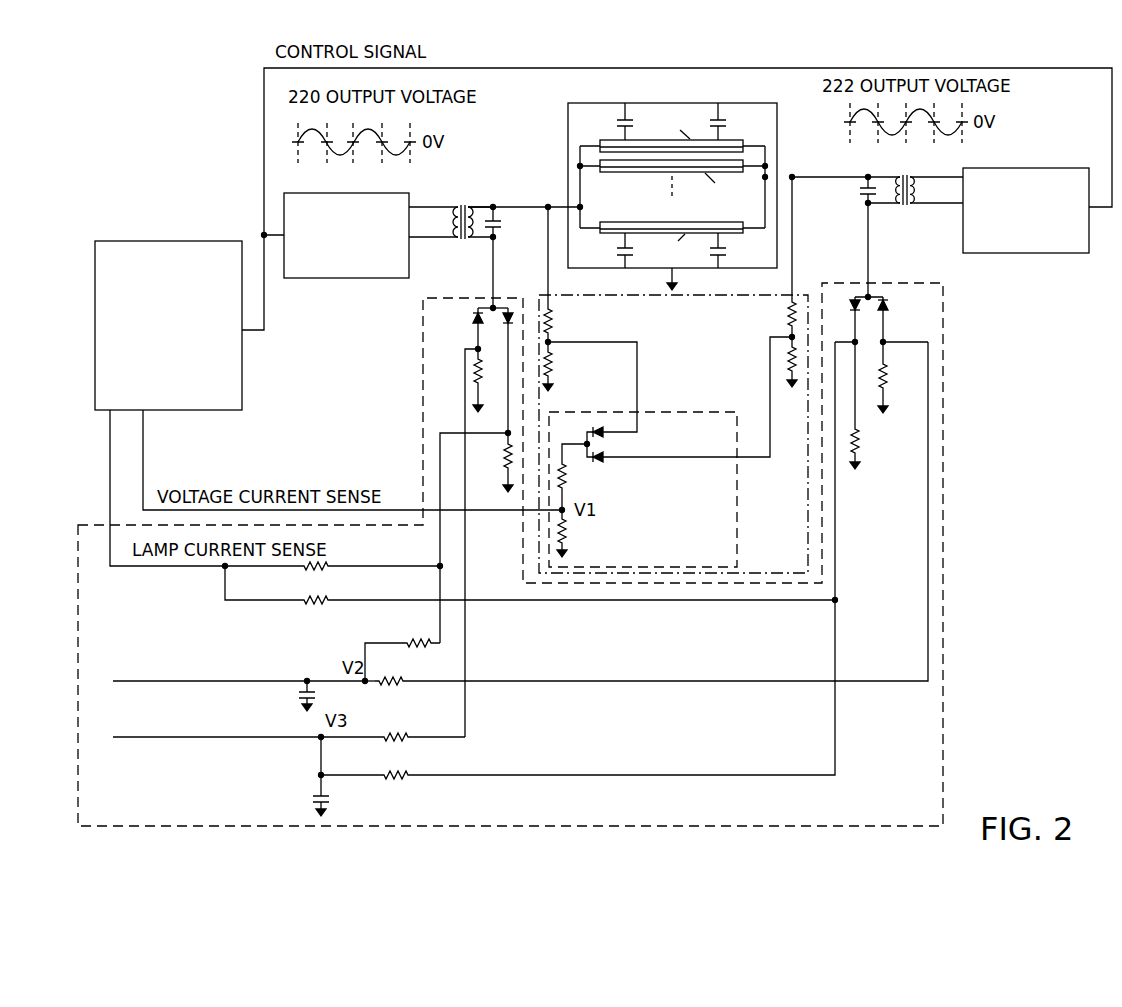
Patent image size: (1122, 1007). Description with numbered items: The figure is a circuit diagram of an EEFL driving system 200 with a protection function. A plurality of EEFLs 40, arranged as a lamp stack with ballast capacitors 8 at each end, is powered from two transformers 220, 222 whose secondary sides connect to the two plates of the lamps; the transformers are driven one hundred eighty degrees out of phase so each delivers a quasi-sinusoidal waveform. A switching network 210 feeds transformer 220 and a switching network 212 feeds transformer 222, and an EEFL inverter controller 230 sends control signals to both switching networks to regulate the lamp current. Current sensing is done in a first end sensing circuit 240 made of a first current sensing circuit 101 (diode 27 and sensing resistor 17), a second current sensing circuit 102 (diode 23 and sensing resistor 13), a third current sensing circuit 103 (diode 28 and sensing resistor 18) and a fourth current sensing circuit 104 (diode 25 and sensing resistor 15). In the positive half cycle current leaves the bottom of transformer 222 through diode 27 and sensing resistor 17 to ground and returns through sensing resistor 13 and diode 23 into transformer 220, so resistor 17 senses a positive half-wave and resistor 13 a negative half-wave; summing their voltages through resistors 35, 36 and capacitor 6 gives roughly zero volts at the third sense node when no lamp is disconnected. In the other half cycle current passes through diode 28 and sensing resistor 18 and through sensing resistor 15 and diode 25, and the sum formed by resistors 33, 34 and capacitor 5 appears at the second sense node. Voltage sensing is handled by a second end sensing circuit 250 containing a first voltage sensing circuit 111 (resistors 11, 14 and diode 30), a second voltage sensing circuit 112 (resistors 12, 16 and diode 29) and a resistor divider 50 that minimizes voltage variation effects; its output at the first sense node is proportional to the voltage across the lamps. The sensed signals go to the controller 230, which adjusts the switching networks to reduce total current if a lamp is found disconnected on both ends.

The EEFL inverter system 200 is at (163, 164).
The transformer 220 is at (473, 204).
The transformer 222 is at (910, 212).
The switching network 210 is at (346, 235).
The switching network 212 is at (1026, 210).
The EEFL inverter controller 230 is at (168, 325).
The EEFLs 40 is at (672, 181).
The ballast capacitor 8 is at (613, 250).
The second end sensing circuit 250 is at (710, 301).
The resistor divider 50 is at (688, 411).
The first end sensing circuit 240 is at (945, 604).
The diode 28 is at (512, 305).
The diode 23 is at (471, 318).
The sensing resistor 13 is at (483, 382).
The sensing resistor 18 is at (501, 454).
The resistor 12 is at (553, 320).
The resistor 16 is at (553, 371).
The second voltage sensing circuit 112 is at (638, 379).
The resistor 11 is at (786, 315).
The resistor 14 is at (785, 355).
The first voltage sensing circuit 111 is at (770, 428).
The diode 29 is at (591, 431).
The diode 30 is at (603, 461).
The diode 27 is at (852, 303).
The diode 25 is at (886, 300).
The sensing resistor 15 is at (888, 381).
The sensing resistor 17 is at (860, 440).
The first current sensing circuit 101 is at (678, 777).
The second current sensing circuit 102 is at (466, 701).
The third current sensing circuit 103 is at (440, 623).
The fourth current sensing circuit 104 is at (578, 677).
The resistor 33 is at (426, 644).
The resistor 34 is at (387, 676).
The resistor 35 is at (387, 732).
The resistor 36 is at (392, 771).
The capacitor 5 is at (299, 694).
The capacitor 6 is at (312, 798).